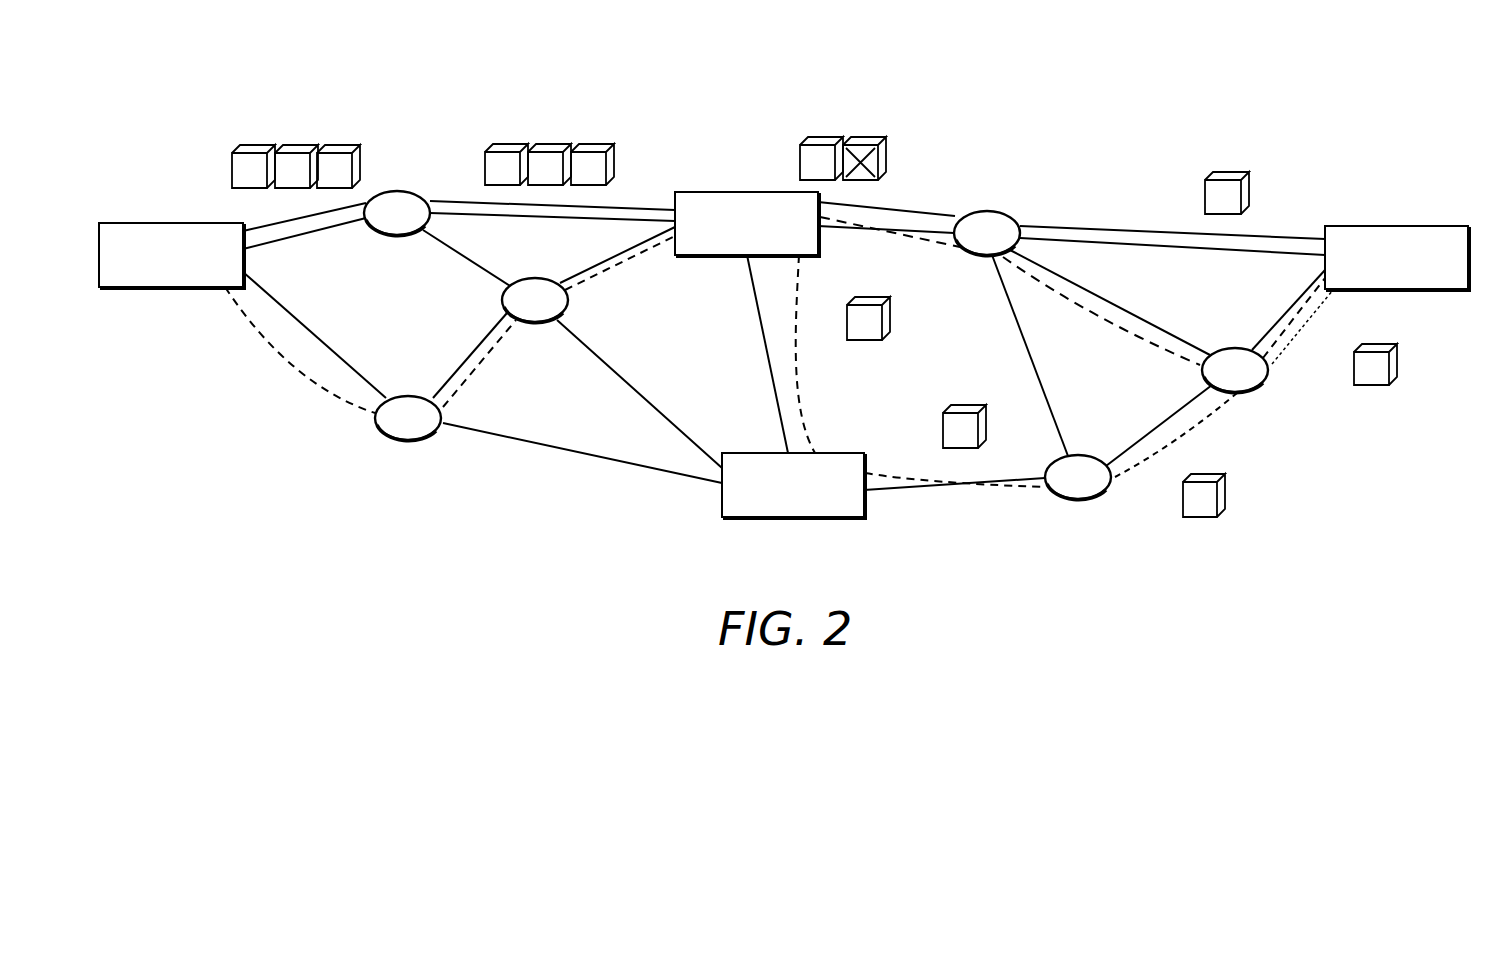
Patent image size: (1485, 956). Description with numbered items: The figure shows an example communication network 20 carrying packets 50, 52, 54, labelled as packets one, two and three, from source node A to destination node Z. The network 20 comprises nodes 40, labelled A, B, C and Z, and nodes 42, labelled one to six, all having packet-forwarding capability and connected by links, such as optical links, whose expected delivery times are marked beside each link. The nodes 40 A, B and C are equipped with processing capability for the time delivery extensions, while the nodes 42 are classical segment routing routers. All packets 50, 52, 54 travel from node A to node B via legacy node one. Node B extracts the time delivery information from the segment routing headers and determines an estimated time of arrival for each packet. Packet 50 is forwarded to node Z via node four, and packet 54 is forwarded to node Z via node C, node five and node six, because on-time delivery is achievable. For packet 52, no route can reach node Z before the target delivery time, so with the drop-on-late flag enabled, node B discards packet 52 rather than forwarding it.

The communication network 20 is at (152, 68).
The node 40 is at (123, 287).
The node 42 is at (398, 191).
The packet 50 is at (262, 145).
The packet 52 is at (304, 145).
The packet 54 is at (348, 145).